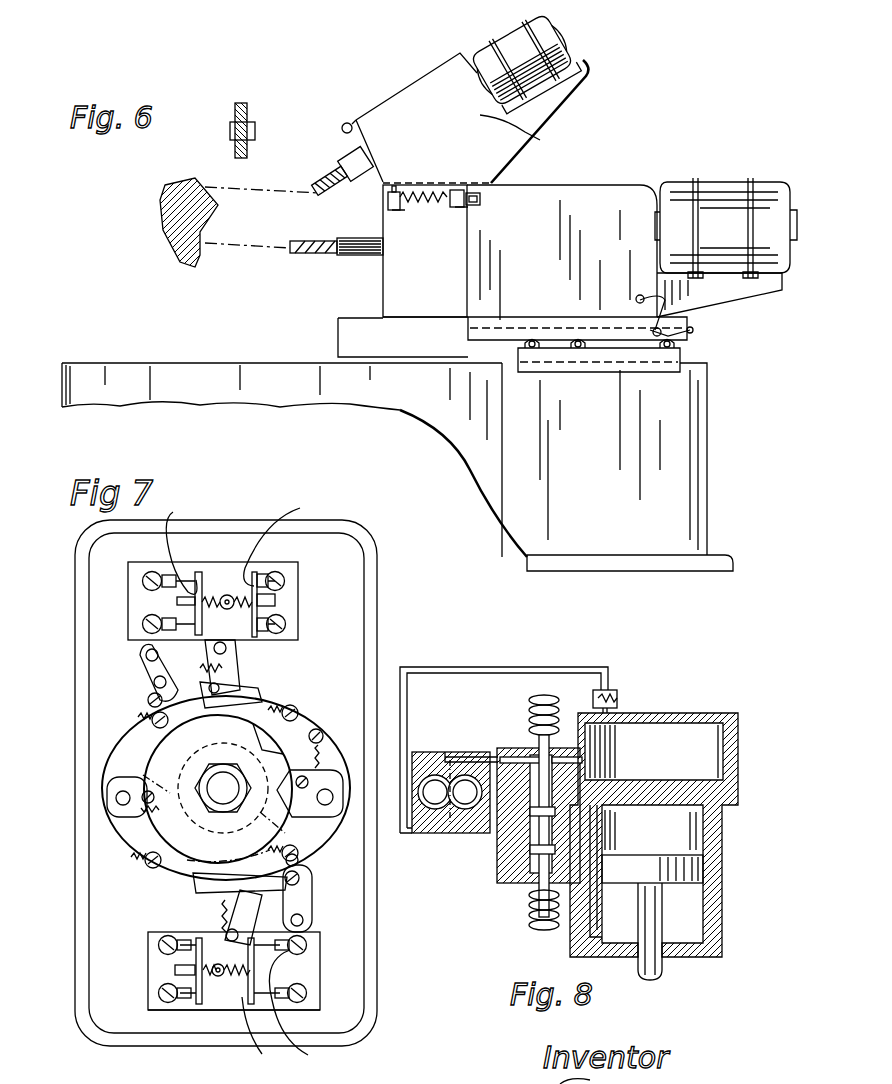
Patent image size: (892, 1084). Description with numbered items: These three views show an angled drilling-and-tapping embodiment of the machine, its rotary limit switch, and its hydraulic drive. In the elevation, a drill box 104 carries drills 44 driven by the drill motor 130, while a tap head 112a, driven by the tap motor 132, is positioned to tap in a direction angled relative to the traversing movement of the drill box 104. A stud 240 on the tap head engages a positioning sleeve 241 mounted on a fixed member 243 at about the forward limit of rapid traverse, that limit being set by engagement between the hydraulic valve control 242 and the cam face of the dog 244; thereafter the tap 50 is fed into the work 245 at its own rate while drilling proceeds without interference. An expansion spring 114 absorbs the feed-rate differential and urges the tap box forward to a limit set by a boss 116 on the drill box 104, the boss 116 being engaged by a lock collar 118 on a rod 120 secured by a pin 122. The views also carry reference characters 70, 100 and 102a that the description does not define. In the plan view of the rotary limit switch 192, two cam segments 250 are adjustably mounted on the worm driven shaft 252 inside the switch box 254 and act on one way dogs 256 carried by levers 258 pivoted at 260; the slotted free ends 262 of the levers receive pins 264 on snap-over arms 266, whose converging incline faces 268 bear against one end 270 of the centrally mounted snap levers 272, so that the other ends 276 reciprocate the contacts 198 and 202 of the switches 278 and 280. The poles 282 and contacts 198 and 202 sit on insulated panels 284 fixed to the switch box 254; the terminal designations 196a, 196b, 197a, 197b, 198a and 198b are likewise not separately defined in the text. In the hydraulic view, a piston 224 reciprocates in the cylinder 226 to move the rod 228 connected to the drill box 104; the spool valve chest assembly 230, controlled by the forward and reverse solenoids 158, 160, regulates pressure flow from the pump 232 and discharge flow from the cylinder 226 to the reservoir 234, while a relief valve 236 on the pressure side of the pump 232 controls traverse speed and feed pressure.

In FIG. 6, the drills 44 is at (317, 255).
In FIG. 6, the tap 50 is at (325, 178).
In FIG. 6, the head block 70 is at (438, 250).
In FIG. 6, the base 100 is at (397, 467).
In FIG. 6, the slide bed 102a is at (318, 318).
In FIG. 6, the drill box 104 is at (624, 252).
In FIG. 6, the tap head 112a is at (474, 118).
In FIG. 6, the expansion spring 114 is at (433, 208).
In FIG. 6, the boss 116 is at (480, 205).
In FIG. 6, the lock collar 118 is at (463, 190).
In FIG. 6, the rod 120 is at (437, 188).
In FIG. 6, the pin 122 is at (388, 205).
In FIG. 6, the drill motor 130 is at (720, 192).
In FIG. 6, the tap motor 132 is at (565, 52).
In FIG. 8, the forward solenoid 158 is at (548, 692).
In FIG. 8, the reverse solenoid 160 is at (535, 922).
In FIG. 7, the rotary limit switch 192 is at (380, 606).
In FIG. 7, the terminal 196a is at (307, 952).
In FIG. 7, the terminal 196b is at (308, 996).
In FIG. 7, the terminal 197a is at (158, 993).
In FIG. 7, the terminal 197b is at (158, 943).
In FIG. 7, the contacts 198 is at (212, 590).
In FIG. 7, the contact 198a is at (290, 580).
In FIG. 7, the contact 198b is at (290, 636).
In FIG. 7, the contacts 202 is at (200, 1003).
In FIG. 8, the piston 224 is at (703, 865).
In FIG. 8, the cylinder 226 is at (602, 836).
In FIG. 8, the rod 228 is at (665, 966).
In FIG. 8, the spool valve chest assembly 230 is at (484, 868).
In FIG. 8, the pump 232 is at (425, 835).
In FIG. 8, the reservoir 234 is at (738, 715).
In FIG. 8, the relief valve 236 is at (617, 695).
In FIG. 6, the stud 240 is at (345, 126).
In FIG. 6, the positioning sleeve 241 is at (255, 128).
In FIG. 6, the hydraulic valve control 242 is at (690, 328).
In FIG. 6, the fixed member 243 is at (244, 105).
In FIG. 6, the dog 244 is at (578, 358).
In FIG. 6, the work 245 is at (198, 212).
In FIG. 7, the cam segments 250 is at (245, 718).
In FIG. 7, the worm driven shaft 252 is at (222, 788).
In FIG. 7, the switch box 254 is at (378, 568).
In FIG. 7, the one way dogs 256 is at (107, 790).
In FIG. 7, the levers 258 is at (118, 825).
In FIG. 7, the pivot 260 is at (290, 710).
In FIG. 7, the slot 262 is at (148, 700).
In FIG. 7, the pins 264 is at (150, 700).
In FIG. 7, the snap-over arms 266 is at (225, 682).
In FIG. 7, the converging incline faces 268 is at (210, 670).
In FIG. 7, the end of snap lever 270 is at (154, 681).
In FIG. 7, the snap levers 272 is at (142, 655).
In FIG. 7, the other ends of snap levers 276 is at (276, 604).
In FIG. 7, the switch 278 is at (279, 555).
In FIG. 7, the switch 280 is at (175, 1012).
In FIG. 7, the poles 282 is at (253, 787).
In FIG. 7, the insulated panels 284 is at (287, 785).